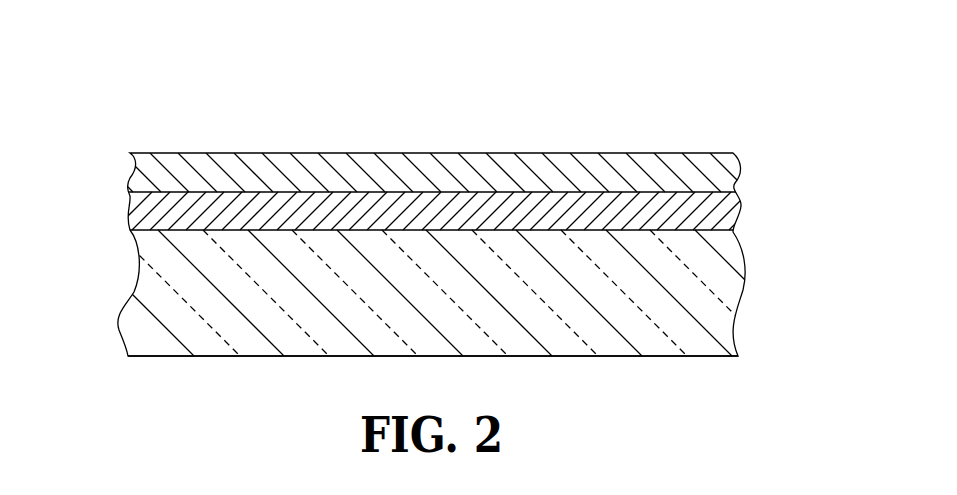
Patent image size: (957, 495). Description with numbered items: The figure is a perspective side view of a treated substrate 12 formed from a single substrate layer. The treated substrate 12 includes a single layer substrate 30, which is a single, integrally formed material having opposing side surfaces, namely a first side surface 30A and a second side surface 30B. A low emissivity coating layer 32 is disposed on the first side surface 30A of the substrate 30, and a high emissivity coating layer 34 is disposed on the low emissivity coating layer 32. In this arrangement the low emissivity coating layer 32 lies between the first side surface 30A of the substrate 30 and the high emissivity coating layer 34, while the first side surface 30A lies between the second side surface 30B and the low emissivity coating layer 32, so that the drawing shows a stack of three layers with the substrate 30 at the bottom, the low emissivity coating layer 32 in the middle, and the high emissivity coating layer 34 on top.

The treated substrate 12 is at (705, 97).
The single layer substrate 30 is at (140, 330).
The first side surface 30A is at (703, 229).
The second side surface 30B is at (650, 357).
The low emissivity coating layer 32 is at (128, 218).
The high emissivity coating layer 34 is at (133, 173).